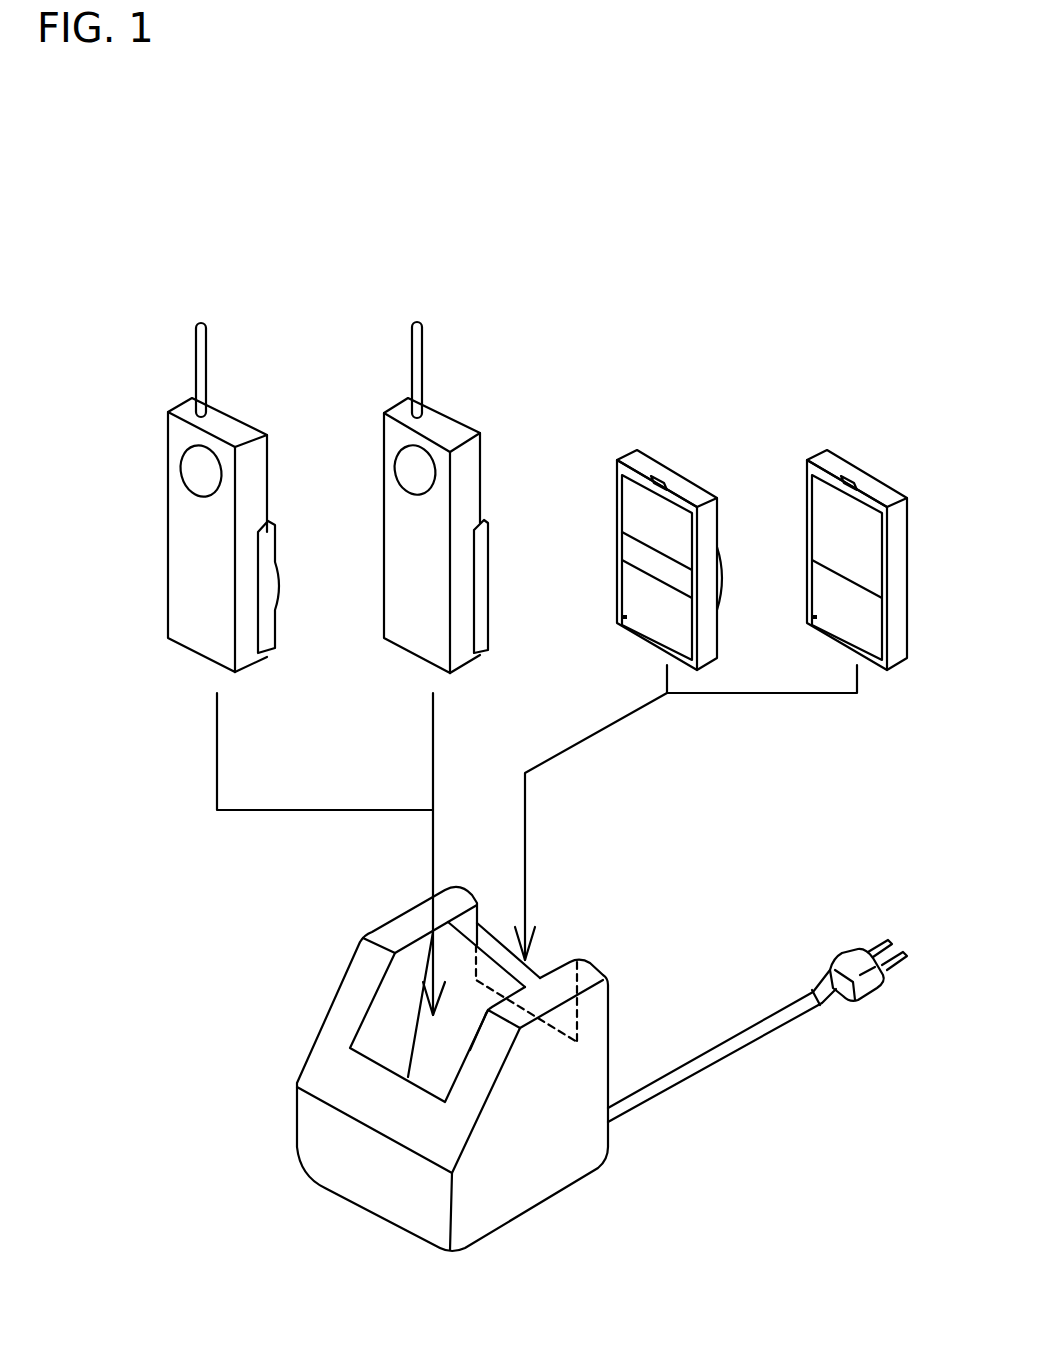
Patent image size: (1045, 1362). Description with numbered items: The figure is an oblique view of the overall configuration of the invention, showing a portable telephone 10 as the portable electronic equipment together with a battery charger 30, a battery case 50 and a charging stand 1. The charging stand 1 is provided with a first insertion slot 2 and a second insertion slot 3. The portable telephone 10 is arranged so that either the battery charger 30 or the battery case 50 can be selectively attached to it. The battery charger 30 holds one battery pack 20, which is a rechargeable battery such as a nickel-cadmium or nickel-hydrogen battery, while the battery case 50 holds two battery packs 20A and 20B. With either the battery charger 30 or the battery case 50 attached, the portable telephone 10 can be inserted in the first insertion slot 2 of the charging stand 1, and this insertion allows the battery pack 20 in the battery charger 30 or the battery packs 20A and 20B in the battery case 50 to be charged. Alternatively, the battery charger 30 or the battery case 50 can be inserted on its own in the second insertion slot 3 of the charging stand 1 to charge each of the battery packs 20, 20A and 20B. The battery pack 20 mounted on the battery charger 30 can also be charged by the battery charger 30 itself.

The charging stand 1 is at (587, 1086).
The first insertion slot 2 is at (378, 1013).
The second insertion slot 3 is at (548, 947).
The portable telephone 10 is at (238, 410).
The battery pack 20 is at (828, 597).
The battery pack 20A is at (633, 505).
The battery pack 20B is at (638, 612).
The battery charger 30 is at (690, 530).
The battery case 50 is at (490, 540).